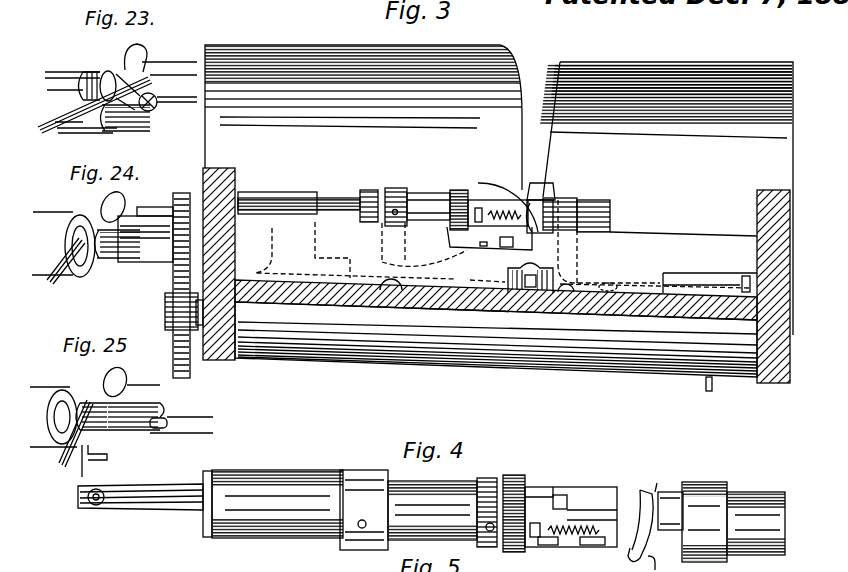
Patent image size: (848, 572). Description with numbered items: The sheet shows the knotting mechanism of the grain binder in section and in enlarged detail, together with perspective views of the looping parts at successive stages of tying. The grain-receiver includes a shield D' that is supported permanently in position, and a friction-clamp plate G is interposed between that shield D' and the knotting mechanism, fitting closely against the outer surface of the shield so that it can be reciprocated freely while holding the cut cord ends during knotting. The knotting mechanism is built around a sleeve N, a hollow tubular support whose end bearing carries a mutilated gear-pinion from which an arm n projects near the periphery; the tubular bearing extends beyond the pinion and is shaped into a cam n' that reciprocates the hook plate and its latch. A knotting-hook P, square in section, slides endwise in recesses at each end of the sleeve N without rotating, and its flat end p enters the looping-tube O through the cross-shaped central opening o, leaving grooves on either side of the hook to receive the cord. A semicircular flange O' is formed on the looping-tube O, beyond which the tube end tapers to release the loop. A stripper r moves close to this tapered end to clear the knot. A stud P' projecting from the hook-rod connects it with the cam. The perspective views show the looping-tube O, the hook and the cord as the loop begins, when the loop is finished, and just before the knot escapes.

In FIG. 3, the shield D' is at (499, 190).
In FIG. 3, the plate G is at (496, 316).
In FIG. 23, the looping-tube O is at (81, 102).
In FIG. 24, the looping-tube O is at (63, 248).
In FIG. 25, the looping-tube O is at (52, 417).
In FIG. 4, the looping-tube O is at (733, 522).
In FIG. 23, the semicircular flange O' is at (122, 81).
In FIG. 24, the semicircular flange O' is at (102, 207).
In FIG. 25, the semicircular flange O' is at (102, 382).
In FIG. 4, the semicircular flange O' is at (640, 512).
In FIG. 23, the arm n is at (177, 96).
In FIG. 4, the arm n is at (571, 517).
In FIG. 23, the central opening o is at (154, 108).
In FIG. 24, the knotting-hook P is at (145, 234).
In FIG. 25, the knotting-hook P is at (160, 419).
In FIG. 25, the end of the hook p is at (155, 431).
In FIG. 25, the stripper r is at (99, 461).
In FIG. 4, the stripper r is at (657, 560).
In FIG. 4, the stud P' is at (140, 508).
In FIG. 4, the sleeve N is at (350, 510).
In FIG. 4, the cam n' is at (567, 492).
In FIG. 4, the pin p' is at (663, 477).